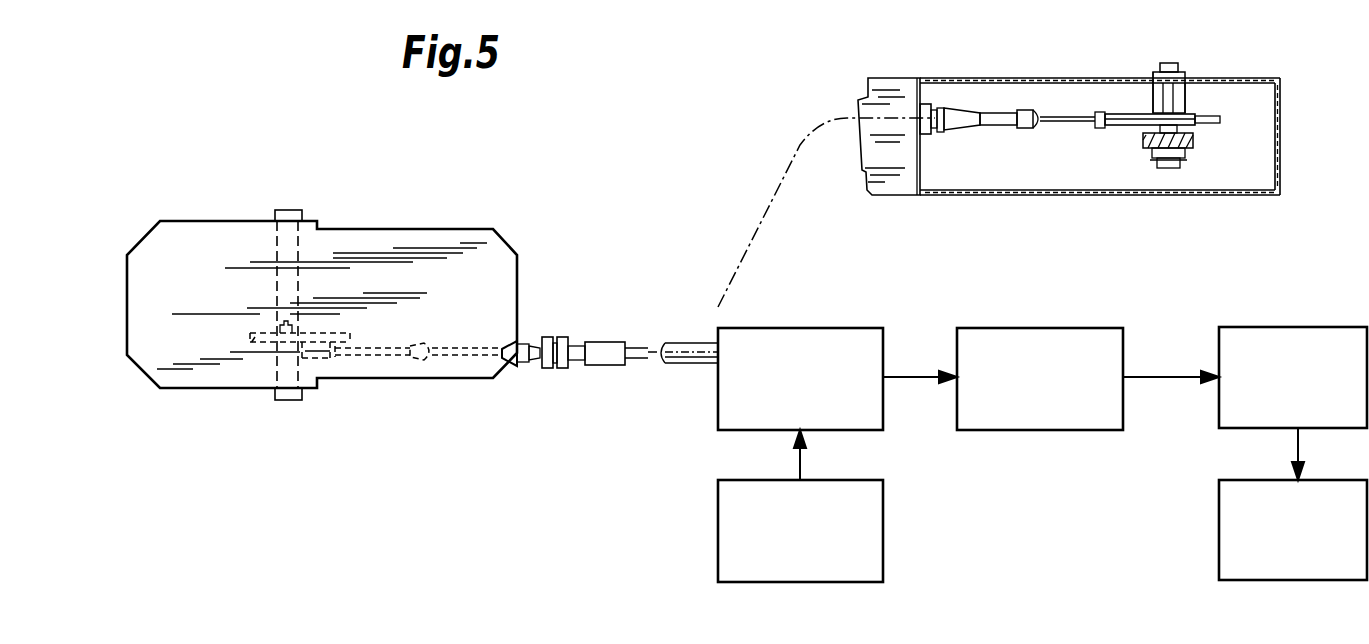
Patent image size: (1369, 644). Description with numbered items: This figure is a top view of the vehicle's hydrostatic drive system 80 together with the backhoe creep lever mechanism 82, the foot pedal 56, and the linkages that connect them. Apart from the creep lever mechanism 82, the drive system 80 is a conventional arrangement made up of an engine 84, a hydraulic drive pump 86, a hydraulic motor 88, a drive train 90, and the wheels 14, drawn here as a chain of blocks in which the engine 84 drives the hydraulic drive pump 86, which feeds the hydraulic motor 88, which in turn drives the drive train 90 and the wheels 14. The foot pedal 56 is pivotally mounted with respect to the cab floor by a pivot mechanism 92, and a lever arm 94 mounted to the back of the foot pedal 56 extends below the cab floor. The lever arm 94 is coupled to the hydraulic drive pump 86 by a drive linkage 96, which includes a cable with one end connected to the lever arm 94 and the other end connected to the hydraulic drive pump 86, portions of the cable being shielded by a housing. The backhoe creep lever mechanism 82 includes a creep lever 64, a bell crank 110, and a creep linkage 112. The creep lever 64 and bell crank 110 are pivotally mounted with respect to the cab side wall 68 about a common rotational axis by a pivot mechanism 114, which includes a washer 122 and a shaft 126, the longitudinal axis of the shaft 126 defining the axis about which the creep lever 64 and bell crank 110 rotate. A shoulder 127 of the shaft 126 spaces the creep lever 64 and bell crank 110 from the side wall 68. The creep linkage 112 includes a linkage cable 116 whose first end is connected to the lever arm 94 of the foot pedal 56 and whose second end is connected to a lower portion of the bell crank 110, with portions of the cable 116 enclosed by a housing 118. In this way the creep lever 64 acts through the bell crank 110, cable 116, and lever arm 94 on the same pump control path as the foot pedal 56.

The wheels 14 is at (1222, 495).
The foot pedal 56 is at (330, 236).
The creep lever 64 is at (1193, 137).
The cab side wall 68 is at (997, 101).
The hydrostatic drive system 80 is at (657, 385).
The backhoe creep lever mechanism 82 is at (1143, 148).
The engine 84 is at (745, 480).
The hydraulic drive pump 86 is at (851, 430).
The hydraulic motor 88 is at (999, 430).
The drive train 90 is at (1243, 430).
The pivot mechanism 92 is at (291, 401).
The lever arm 94 is at (255, 345).
The drive linkage 96 is at (692, 364).
The bell crank 110 is at (1222, 117).
The creep linkage 112 is at (565, 334).
The pivot mechanism 114 is at (1178, 63).
The linkage cable 116 is at (370, 357).
The housing 118 is at (600, 350).
The washer 122 is at (1187, 161).
The shaft 126 is at (1188, 94).
The shoulder 127 is at (1152, 100).